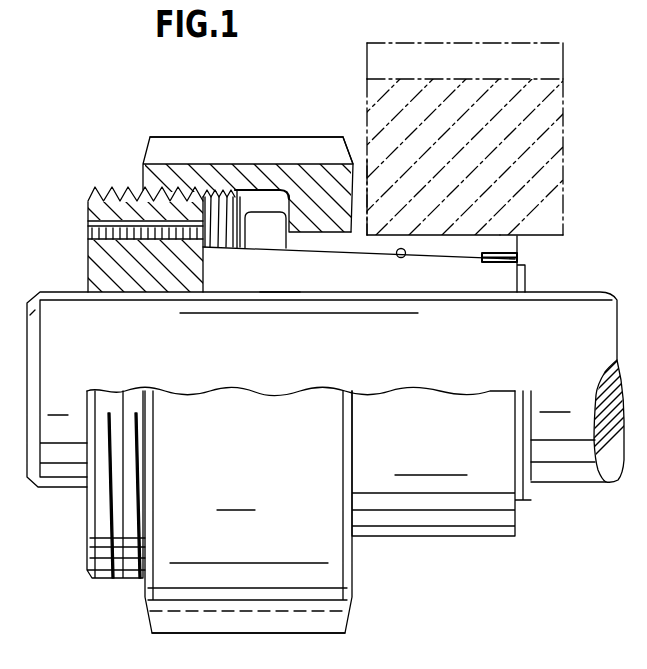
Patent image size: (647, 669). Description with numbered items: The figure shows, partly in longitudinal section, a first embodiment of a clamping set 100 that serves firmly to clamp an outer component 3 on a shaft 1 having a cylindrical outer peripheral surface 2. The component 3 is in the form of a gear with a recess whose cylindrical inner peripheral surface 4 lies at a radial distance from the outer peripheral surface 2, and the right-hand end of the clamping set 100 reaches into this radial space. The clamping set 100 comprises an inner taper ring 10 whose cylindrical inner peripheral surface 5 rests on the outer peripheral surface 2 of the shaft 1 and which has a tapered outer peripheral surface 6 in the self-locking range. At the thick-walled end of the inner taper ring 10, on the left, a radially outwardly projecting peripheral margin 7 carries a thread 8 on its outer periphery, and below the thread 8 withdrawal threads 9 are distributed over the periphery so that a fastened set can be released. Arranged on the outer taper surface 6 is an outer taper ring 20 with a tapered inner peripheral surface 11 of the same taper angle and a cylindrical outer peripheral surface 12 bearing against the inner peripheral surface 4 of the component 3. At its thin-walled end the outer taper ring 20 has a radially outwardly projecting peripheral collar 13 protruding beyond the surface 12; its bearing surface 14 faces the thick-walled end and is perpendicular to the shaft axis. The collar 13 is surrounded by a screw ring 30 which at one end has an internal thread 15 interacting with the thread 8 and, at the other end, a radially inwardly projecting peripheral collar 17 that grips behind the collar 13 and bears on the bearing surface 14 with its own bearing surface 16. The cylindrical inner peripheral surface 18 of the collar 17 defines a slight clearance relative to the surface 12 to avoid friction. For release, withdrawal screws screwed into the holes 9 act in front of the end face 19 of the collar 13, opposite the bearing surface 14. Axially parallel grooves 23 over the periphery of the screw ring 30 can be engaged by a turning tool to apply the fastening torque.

The clamping set 100 is at (97, 158).
The shaft 1 is at (578, 427).
The cylindrical outer peripheral surface 2 is at (600, 285).
The outer component 3 is at (560, 127).
The cylindrical inner peripheral surface 4 is at (556, 238).
The cylindrical inner peripheral surface 5 is at (285, 277).
The tapered outer peripheral surface 6 is at (398, 258).
The peripheral margin 7 is at (88, 208).
The thread 8 is at (92, 196).
The withdrawal threads 9 is at (88, 228).
The inner taper ring 10 is at (85, 258).
The tapered inner peripheral surface 11 is at (350, 256).
The cylindrical outer peripheral surface 12 is at (427, 233).
The peripheral collar 13 is at (262, 220).
The bearing surface 14 is at (318, 222).
The internal thread 15 is at (226, 200).
The bearing surface 16 is at (272, 210).
The peripheral collar 17 is at (328, 212).
The inner peripheral surface 18 is at (380, 227).
The end face 19 is at (246, 248).
The outer taper ring 20 is at (523, 250).
The axially parallel grooves 23 is at (172, 147).
The screw ring 30 is at (140, 146).